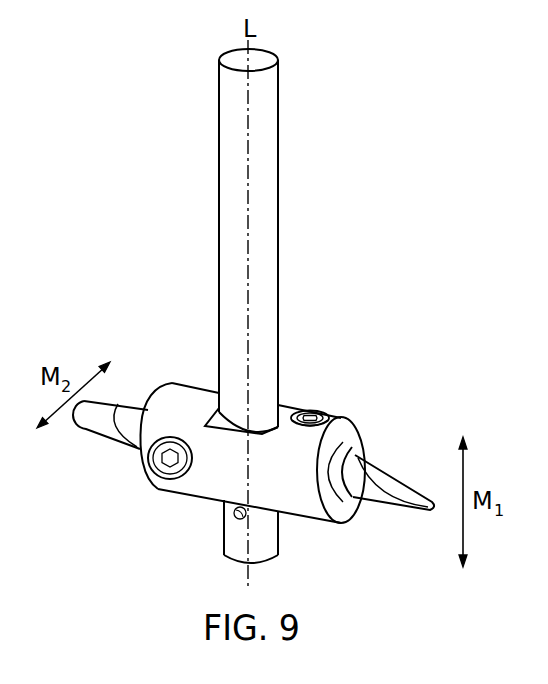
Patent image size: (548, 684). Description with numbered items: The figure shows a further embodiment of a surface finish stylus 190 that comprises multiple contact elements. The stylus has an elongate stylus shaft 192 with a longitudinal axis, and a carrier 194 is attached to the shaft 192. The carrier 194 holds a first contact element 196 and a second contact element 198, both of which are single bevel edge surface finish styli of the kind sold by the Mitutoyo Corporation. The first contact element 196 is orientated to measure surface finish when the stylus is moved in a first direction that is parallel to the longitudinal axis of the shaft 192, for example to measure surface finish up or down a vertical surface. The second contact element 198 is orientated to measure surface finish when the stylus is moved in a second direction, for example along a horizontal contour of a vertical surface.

The surface finish stylus 190 is at (340, 115).
The elongate stylus shaft 192 is at (278, 265).
The carrier 194 is at (338, 418).
The first contact element 196 is at (393, 478).
The second contact element 198 is at (112, 437).